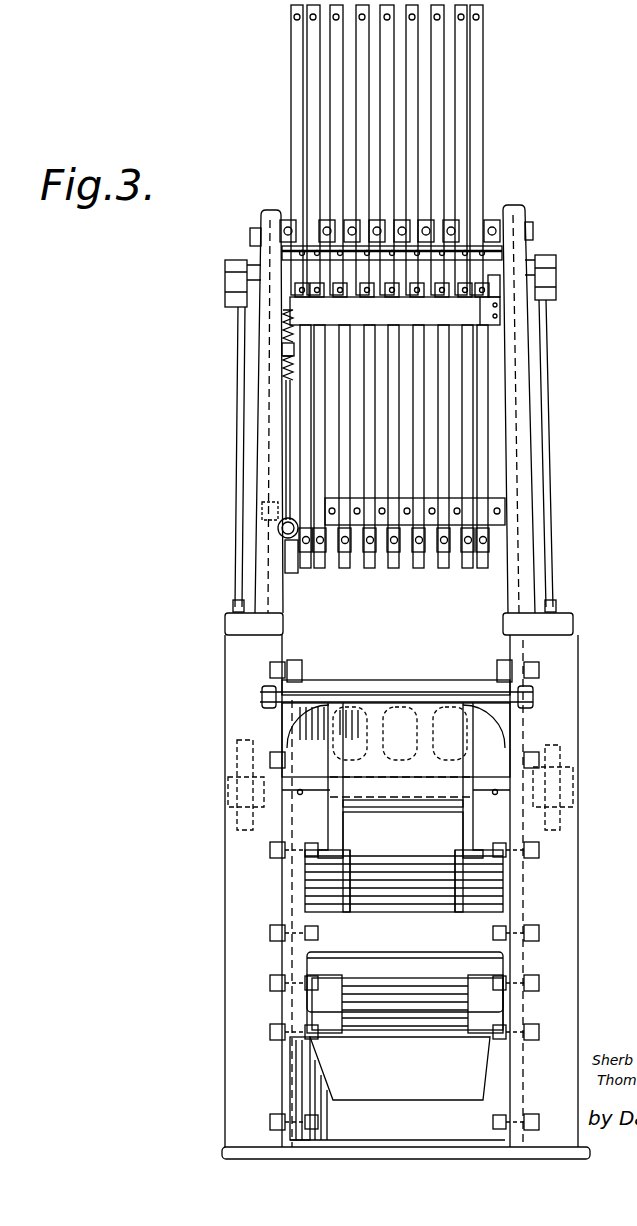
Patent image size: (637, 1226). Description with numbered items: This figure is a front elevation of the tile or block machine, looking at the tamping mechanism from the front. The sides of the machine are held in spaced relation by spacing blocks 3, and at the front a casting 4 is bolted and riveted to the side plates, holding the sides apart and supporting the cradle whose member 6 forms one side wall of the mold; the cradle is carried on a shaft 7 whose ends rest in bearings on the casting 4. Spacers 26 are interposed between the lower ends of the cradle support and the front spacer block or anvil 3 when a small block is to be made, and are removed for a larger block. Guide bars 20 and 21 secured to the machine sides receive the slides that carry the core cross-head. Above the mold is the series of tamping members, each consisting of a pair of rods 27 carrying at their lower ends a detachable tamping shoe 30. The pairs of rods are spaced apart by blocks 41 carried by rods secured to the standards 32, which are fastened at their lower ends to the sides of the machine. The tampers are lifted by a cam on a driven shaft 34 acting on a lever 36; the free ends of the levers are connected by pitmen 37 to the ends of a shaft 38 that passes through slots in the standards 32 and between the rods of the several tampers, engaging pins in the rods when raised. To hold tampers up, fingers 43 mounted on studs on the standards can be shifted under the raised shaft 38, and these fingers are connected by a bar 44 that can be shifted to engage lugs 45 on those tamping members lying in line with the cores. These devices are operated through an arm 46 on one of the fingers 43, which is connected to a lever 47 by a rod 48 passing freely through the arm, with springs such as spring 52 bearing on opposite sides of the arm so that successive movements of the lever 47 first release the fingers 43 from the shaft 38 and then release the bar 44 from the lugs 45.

The spacing block 3 is at (418, 1103).
The casting 4 is at (428, 930).
The cradle member 6 is at (470, 730).
The shaft 7 is at (398, 812).
The guide bar 20 is at (303, 666).
The guide bar 21 is at (352, 733).
The spacer 26 is at (300, 970).
The rod 27 is at (437, 93).
The tamping shoe 30 is at (447, 563).
The standard 32 is at (263, 433).
The driven shaft 34 is at (432, 1020).
The lever 36 is at (262, 820).
The pitman 37 is at (240, 373).
The shaft 38 is at (528, 252).
The block 41 is at (373, 228).
The finger 43 is at (285, 285).
The bar 44 is at (395, 311).
The lug 45 is at (462, 311).
The arm 46 is at (283, 350).
The lever 47 is at (281, 531).
The rod 48 is at (290, 478).
The spring 52 is at (283, 311).